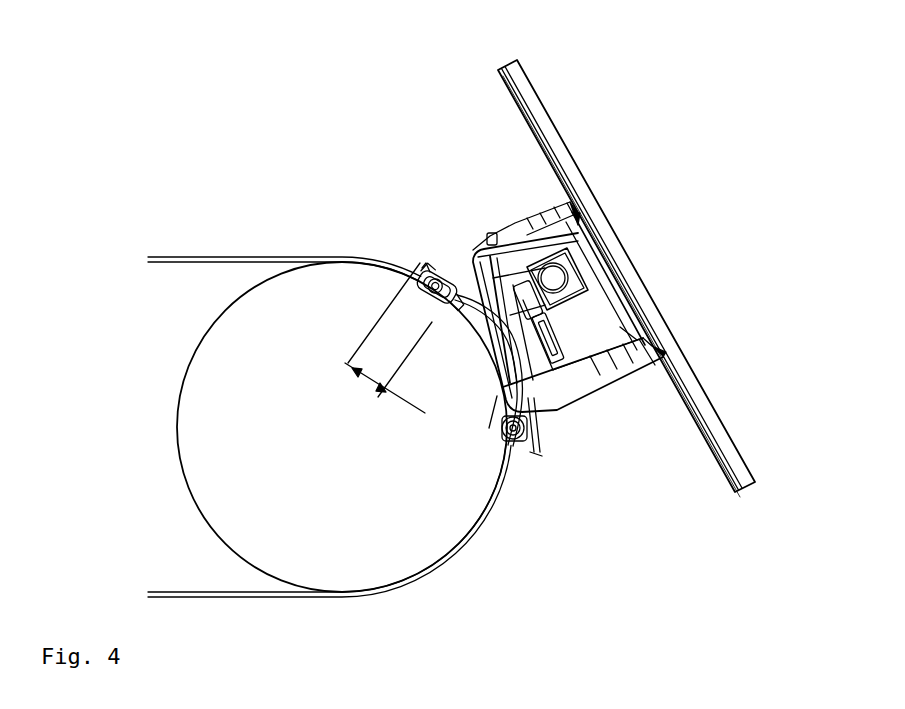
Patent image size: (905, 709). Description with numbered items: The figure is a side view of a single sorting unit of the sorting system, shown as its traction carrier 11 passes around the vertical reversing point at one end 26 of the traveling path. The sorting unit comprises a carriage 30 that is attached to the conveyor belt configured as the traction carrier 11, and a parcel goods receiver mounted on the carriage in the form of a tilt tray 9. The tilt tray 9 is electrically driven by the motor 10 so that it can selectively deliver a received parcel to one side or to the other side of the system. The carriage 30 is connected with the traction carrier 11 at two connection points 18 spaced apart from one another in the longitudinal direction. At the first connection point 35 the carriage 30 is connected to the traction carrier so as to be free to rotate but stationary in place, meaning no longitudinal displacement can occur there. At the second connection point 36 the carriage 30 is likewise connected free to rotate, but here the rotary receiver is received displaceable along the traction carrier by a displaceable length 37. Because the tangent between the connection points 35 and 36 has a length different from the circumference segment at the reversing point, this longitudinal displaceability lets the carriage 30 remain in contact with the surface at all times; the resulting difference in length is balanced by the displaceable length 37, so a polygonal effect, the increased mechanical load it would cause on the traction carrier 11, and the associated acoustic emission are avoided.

The tilt tray 9 is at (665, 258).
The motor 10 is at (527, 220).
The traction carrier 11 is at (155, 256).
The connection point 18 is at (405, 252).
The end 26 is at (262, 316).
The carriage 30 is at (467, 243).
The first connection point 35 is at (497, 433).
The second connection point 36 is at (413, 287).
The displaceable length 37 is at (388, 338).